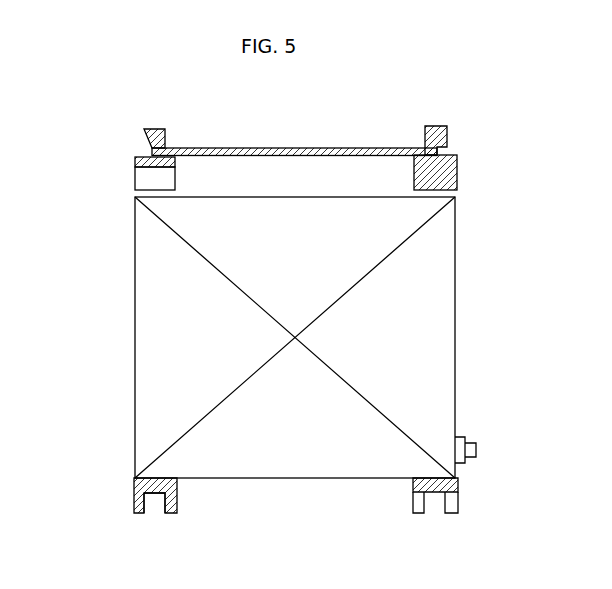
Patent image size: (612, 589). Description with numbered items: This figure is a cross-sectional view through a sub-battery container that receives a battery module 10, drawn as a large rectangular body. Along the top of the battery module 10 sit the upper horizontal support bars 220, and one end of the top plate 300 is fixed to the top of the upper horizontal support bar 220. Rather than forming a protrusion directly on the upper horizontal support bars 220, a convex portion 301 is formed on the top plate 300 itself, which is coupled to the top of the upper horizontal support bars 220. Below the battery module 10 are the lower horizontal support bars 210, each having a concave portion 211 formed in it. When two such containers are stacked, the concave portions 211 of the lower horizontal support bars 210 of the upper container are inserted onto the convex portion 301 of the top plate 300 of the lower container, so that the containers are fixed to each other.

The battery module 10 is at (135, 297).
The lower horizontal support bar 210 is at (134, 483).
The concave portion 211 is at (154, 500).
The upper horizontal support bar 220 is at (135, 158).
The top plate 300 is at (275, 148).
The convex portion 301 is at (165, 136).